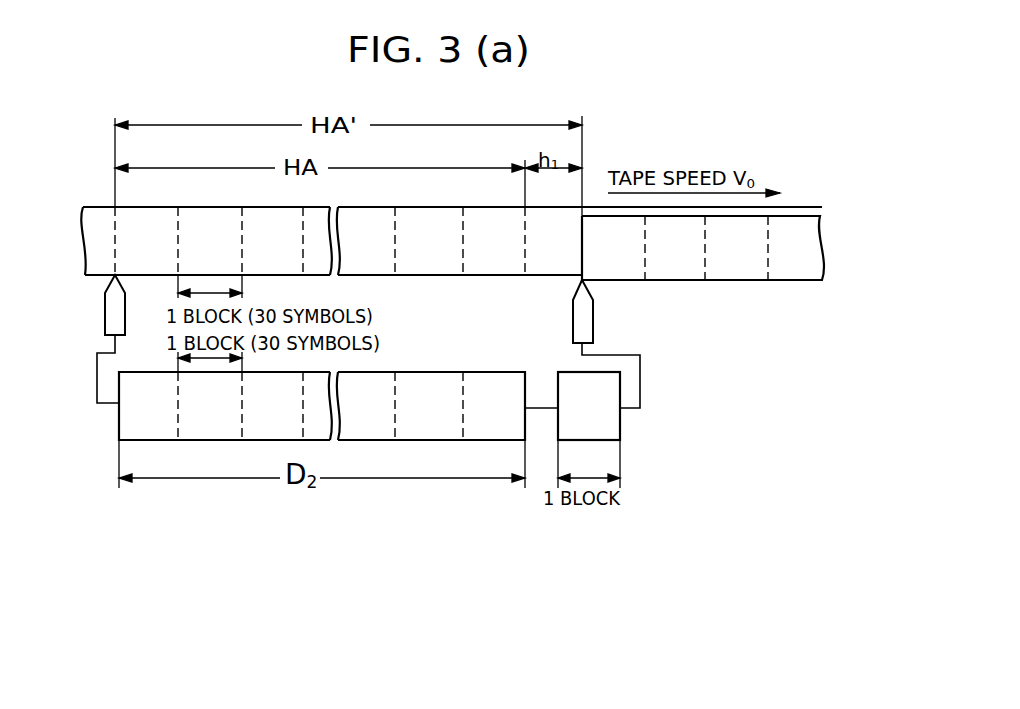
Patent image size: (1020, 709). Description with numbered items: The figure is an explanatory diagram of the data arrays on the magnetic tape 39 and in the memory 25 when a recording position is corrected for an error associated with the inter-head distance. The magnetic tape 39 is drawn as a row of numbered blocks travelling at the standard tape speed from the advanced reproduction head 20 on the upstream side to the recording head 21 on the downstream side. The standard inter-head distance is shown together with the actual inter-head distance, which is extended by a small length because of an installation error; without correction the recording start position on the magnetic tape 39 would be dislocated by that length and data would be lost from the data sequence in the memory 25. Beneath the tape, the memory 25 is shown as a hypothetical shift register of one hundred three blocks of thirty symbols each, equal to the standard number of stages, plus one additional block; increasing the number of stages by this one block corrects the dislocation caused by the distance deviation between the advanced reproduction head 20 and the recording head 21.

The magnetic tape 39 is at (99, 215).
The advanced reproduction head 20 is at (110, 308).
The recording head 21 is at (585, 318).
The memory 25 is at (567, 372).